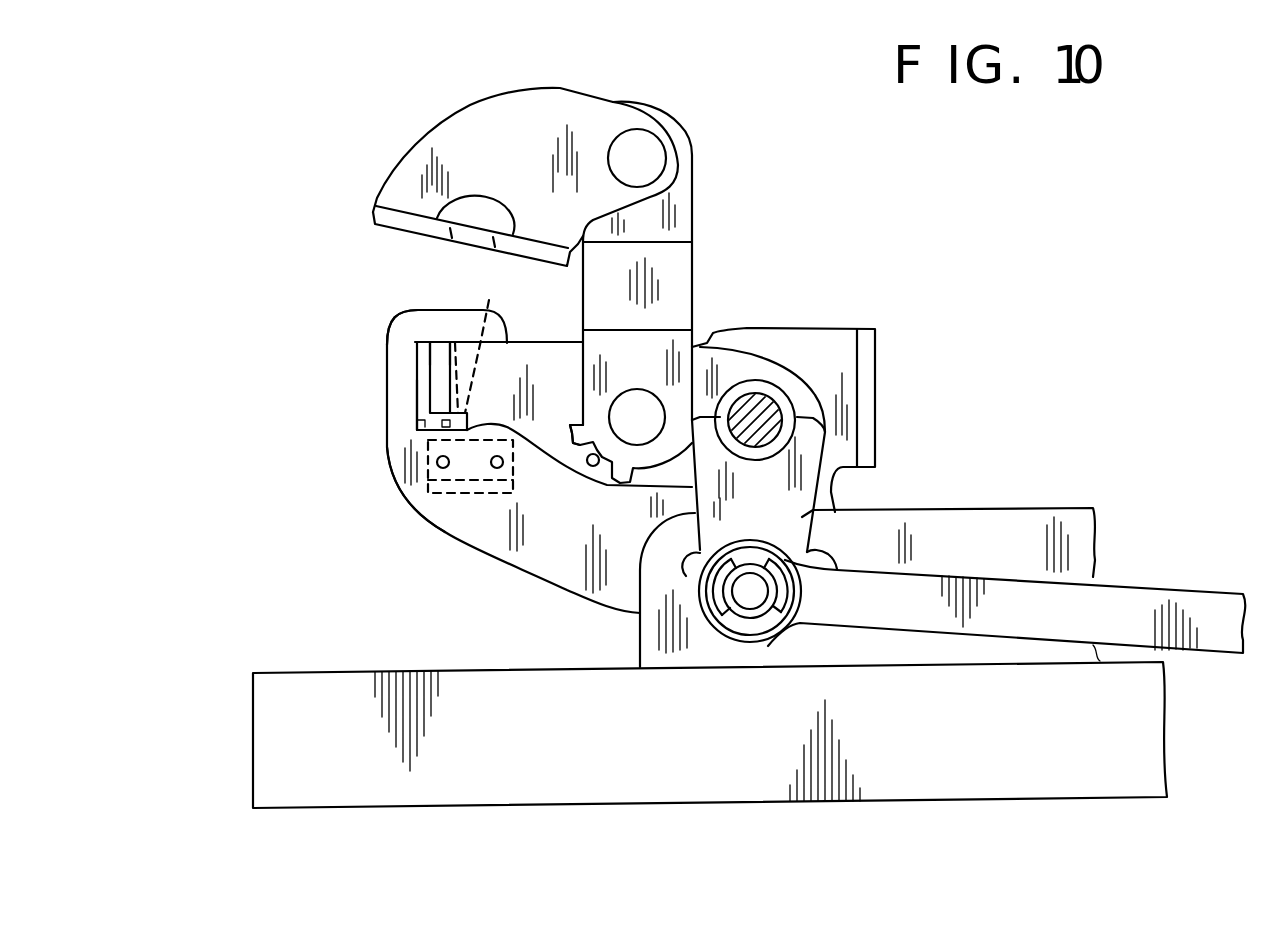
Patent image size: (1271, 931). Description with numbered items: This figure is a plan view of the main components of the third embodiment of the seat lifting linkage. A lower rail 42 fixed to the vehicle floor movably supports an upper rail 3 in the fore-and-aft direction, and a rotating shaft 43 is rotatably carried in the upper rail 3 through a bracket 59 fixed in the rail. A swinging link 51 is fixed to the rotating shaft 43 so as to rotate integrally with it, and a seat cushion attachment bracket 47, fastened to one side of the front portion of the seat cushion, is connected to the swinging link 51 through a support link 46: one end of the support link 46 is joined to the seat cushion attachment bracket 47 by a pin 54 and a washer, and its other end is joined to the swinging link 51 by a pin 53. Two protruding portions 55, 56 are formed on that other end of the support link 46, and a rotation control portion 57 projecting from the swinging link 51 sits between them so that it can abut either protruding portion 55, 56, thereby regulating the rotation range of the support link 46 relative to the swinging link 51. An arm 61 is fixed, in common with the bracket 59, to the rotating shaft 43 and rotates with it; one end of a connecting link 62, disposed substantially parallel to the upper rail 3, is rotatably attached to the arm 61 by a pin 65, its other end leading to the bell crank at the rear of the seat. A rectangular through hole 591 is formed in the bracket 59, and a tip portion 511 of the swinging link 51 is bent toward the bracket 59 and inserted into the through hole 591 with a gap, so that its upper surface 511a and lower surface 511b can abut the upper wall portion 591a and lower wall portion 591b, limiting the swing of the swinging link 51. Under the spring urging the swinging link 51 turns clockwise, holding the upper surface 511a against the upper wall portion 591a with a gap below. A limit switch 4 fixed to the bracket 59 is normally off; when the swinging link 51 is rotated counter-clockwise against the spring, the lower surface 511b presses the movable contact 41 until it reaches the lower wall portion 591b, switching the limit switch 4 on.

The upper rail 3 is at (1000, 527).
The limit switch 4 is at (468, 493).
The movable contact 41 is at (489, 300).
The lower rail 42 is at (287, 738).
The rotating shaft 43 is at (780, 410).
The support link 46 is at (657, 292).
The seat cushion attachment bracket 47 is at (453, 152).
The swinging link 51 is at (547, 443).
The pin 53 is at (627, 430).
The pin 54 is at (650, 153).
The protruding portion 55 is at (578, 420).
The protruding portion 56 is at (616, 488).
The rotation control portion 57 is at (583, 467).
The bracket 59 is at (827, 347).
The arm 61 is at (788, 506).
The connecting link 62 is at (1150, 607).
The pin 65 is at (750, 642).
The tip portion 511 is at (438, 372).
The upper surface 511a is at (428, 340).
The lower surface 511b is at (445, 342).
The through hole 591 is at (423, 395).
The upper wall portion 591a is at (415, 350).
The lower wall portion 591b is at (408, 430).